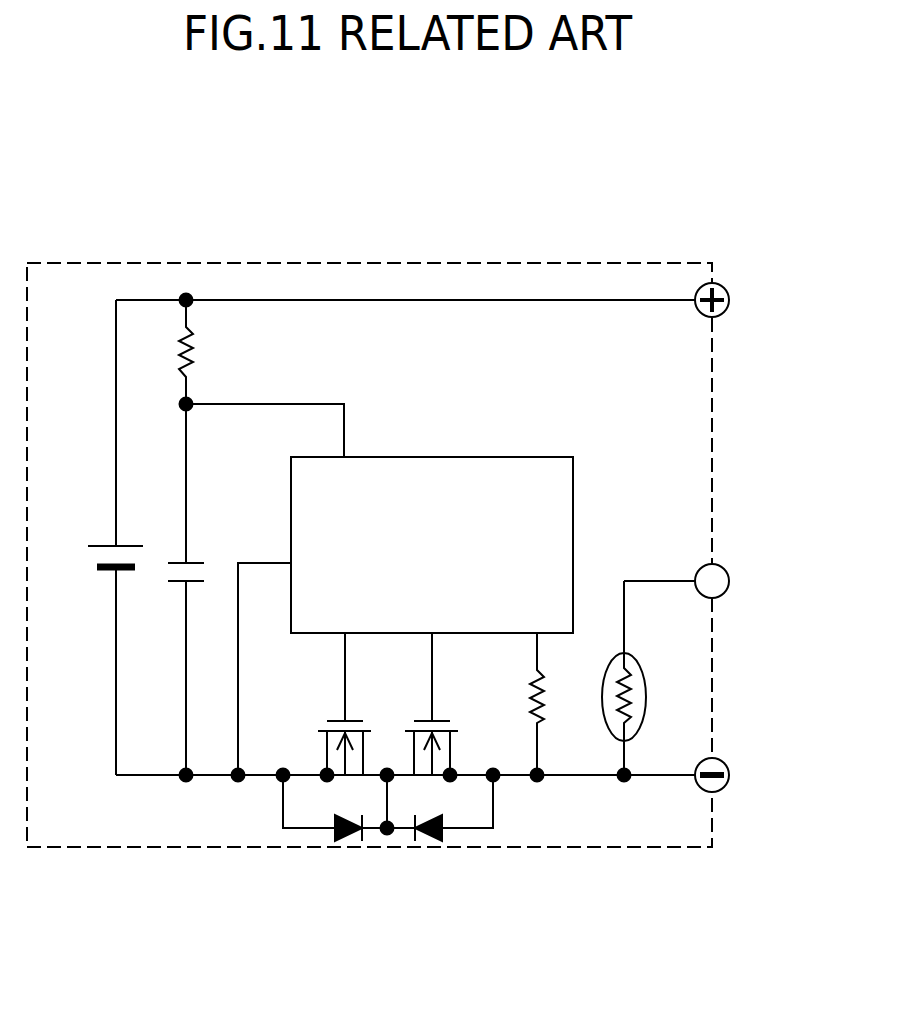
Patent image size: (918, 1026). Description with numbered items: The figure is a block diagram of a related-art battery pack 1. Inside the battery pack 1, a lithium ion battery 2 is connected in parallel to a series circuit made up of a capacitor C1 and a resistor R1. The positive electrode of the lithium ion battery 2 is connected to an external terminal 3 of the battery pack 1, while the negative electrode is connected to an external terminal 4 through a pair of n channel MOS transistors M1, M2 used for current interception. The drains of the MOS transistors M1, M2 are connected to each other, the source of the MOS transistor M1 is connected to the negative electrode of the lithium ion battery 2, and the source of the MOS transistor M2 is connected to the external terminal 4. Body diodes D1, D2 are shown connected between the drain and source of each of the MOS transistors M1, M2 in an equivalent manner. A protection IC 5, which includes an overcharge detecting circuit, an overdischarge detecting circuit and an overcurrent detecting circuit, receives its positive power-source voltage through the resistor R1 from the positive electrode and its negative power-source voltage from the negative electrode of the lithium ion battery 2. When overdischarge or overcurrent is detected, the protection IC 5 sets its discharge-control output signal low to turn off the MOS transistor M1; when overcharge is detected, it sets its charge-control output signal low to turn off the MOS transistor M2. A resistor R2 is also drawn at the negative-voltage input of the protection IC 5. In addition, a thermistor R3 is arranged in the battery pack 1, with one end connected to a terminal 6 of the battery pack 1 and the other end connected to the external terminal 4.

The battery pack 1 is at (515, 263).
The lithium ion battery 2 is at (97, 556).
The external terminal 3 is at (729, 300).
The external terminal 4 is at (729, 775).
The protection IC 5 is at (540, 457).
The terminal 6 is at (729, 581).
The resistor R1 is at (205, 352).
The resistor R2 is at (554, 704).
The thermistor R3 is at (648, 678).
The capacitor C1 is at (178, 589).
The n channel MOS transistor M1 is at (335, 722).
The n channel MOS transistor M2 is at (438, 722).
The body diode D1 is at (352, 837).
The body diode D2 is at (430, 837).